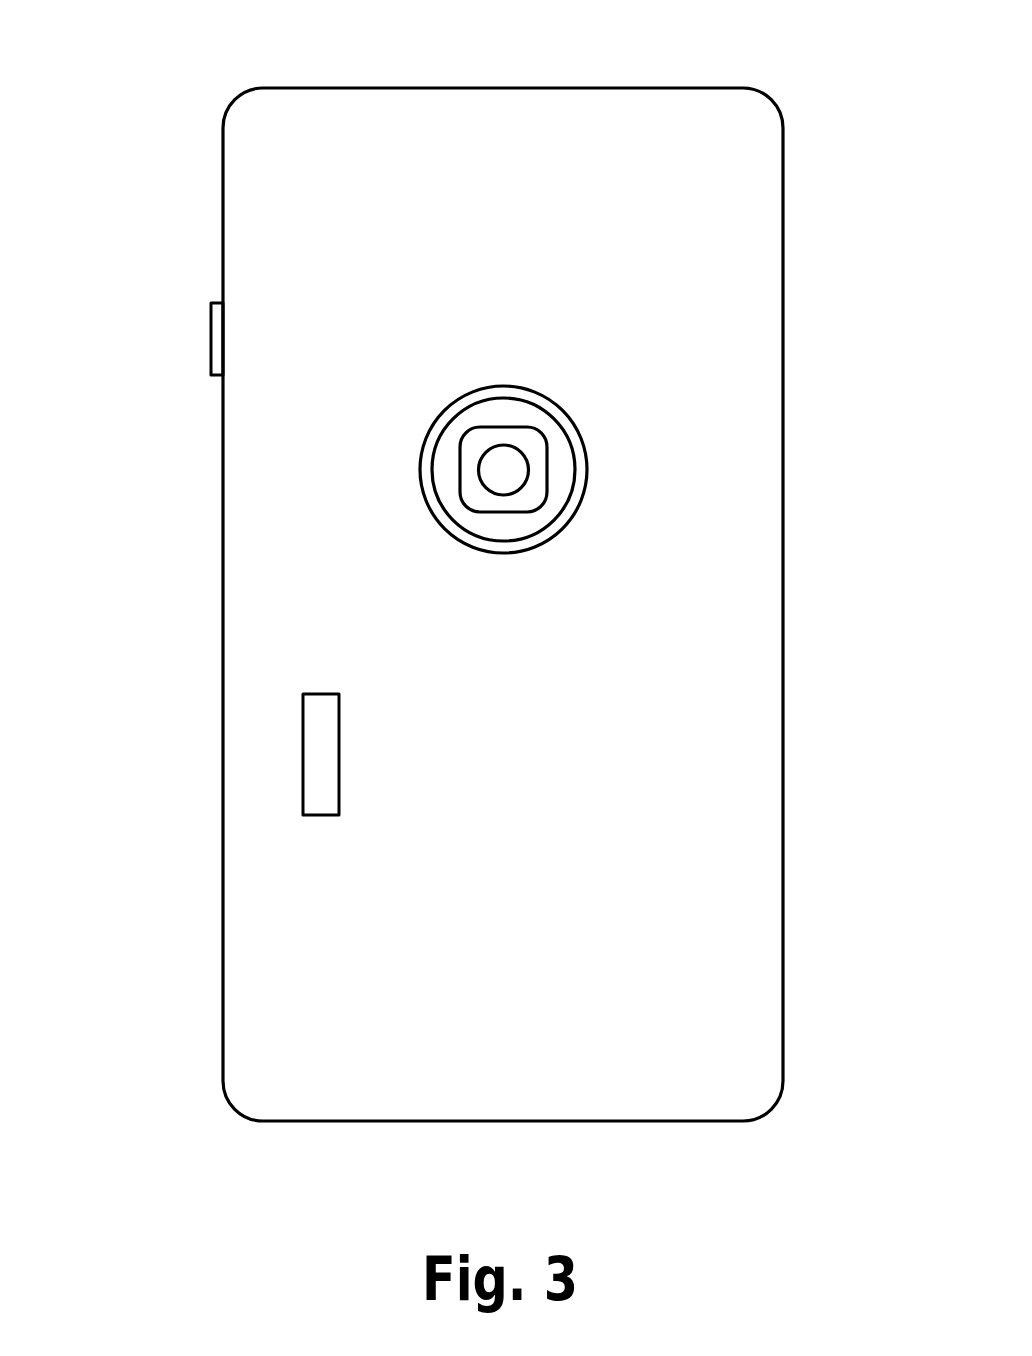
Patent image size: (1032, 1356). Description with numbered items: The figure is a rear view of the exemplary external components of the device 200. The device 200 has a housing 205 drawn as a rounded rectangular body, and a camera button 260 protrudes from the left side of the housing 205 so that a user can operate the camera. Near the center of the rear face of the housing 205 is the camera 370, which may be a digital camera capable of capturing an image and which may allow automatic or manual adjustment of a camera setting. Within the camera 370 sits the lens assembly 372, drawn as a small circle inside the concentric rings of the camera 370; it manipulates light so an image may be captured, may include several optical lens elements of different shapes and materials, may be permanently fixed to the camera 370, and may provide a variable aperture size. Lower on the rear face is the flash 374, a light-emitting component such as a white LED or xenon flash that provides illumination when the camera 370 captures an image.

The device 200 is at (229, 44).
The housing 205 is at (757, 730).
The camera button 260 is at (211, 341).
The camera 370 is at (553, 500).
The lens assembly 372 is at (528, 470).
The flash 374 is at (303, 755).